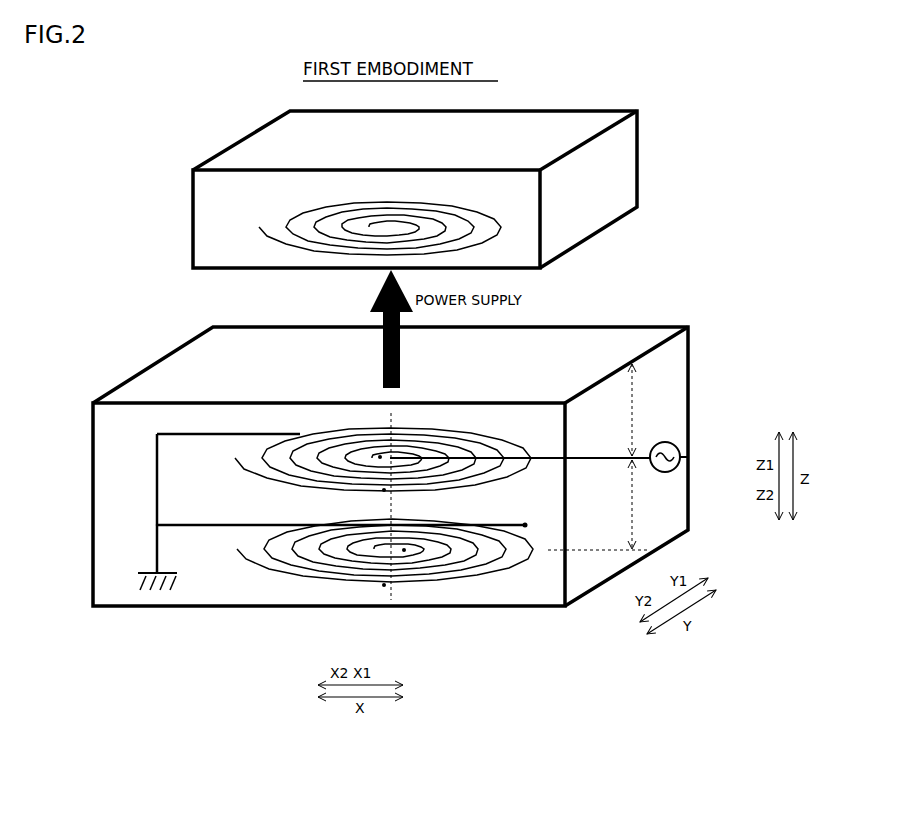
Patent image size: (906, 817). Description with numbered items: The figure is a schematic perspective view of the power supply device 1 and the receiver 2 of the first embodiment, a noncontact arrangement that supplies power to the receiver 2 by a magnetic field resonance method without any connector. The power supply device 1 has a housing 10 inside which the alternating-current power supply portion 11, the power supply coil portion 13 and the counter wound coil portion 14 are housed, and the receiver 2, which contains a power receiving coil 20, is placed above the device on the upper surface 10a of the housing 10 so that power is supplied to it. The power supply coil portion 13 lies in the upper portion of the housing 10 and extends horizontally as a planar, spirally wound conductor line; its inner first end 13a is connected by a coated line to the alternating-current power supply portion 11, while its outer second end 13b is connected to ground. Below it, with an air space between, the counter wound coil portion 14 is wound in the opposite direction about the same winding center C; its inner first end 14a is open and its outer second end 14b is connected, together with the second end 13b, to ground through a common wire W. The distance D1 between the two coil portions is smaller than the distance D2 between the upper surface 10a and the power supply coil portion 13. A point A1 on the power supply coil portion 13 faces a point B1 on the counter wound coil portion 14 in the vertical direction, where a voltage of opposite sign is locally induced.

The power supply device 1 is at (399, 489).
The receiver 2 is at (650, 113).
The housing 10 is at (113, 608).
The upper surface 10a is at (363, 368).
The alternating-current power supply portion 11 is at (670, 440).
The power supply coil portion 13 is at (510, 420).
The inner first end 13a is at (378, 454).
The outer second end 13b is at (253, 433).
The counter wound coil portion 14 is at (501, 591).
The inner first end 14a is at (405, 552).
The outer second end 14b is at (527, 532).
The power receiving coil 20 is at (507, 198).
The common wire W is at (157, 548).
The point A1 is at (382, 491).
The point B1 is at (383, 587).
The winding center C is at (388, 526).
The distance D1 is at (603, 505).
The distance D2 is at (645, 410).